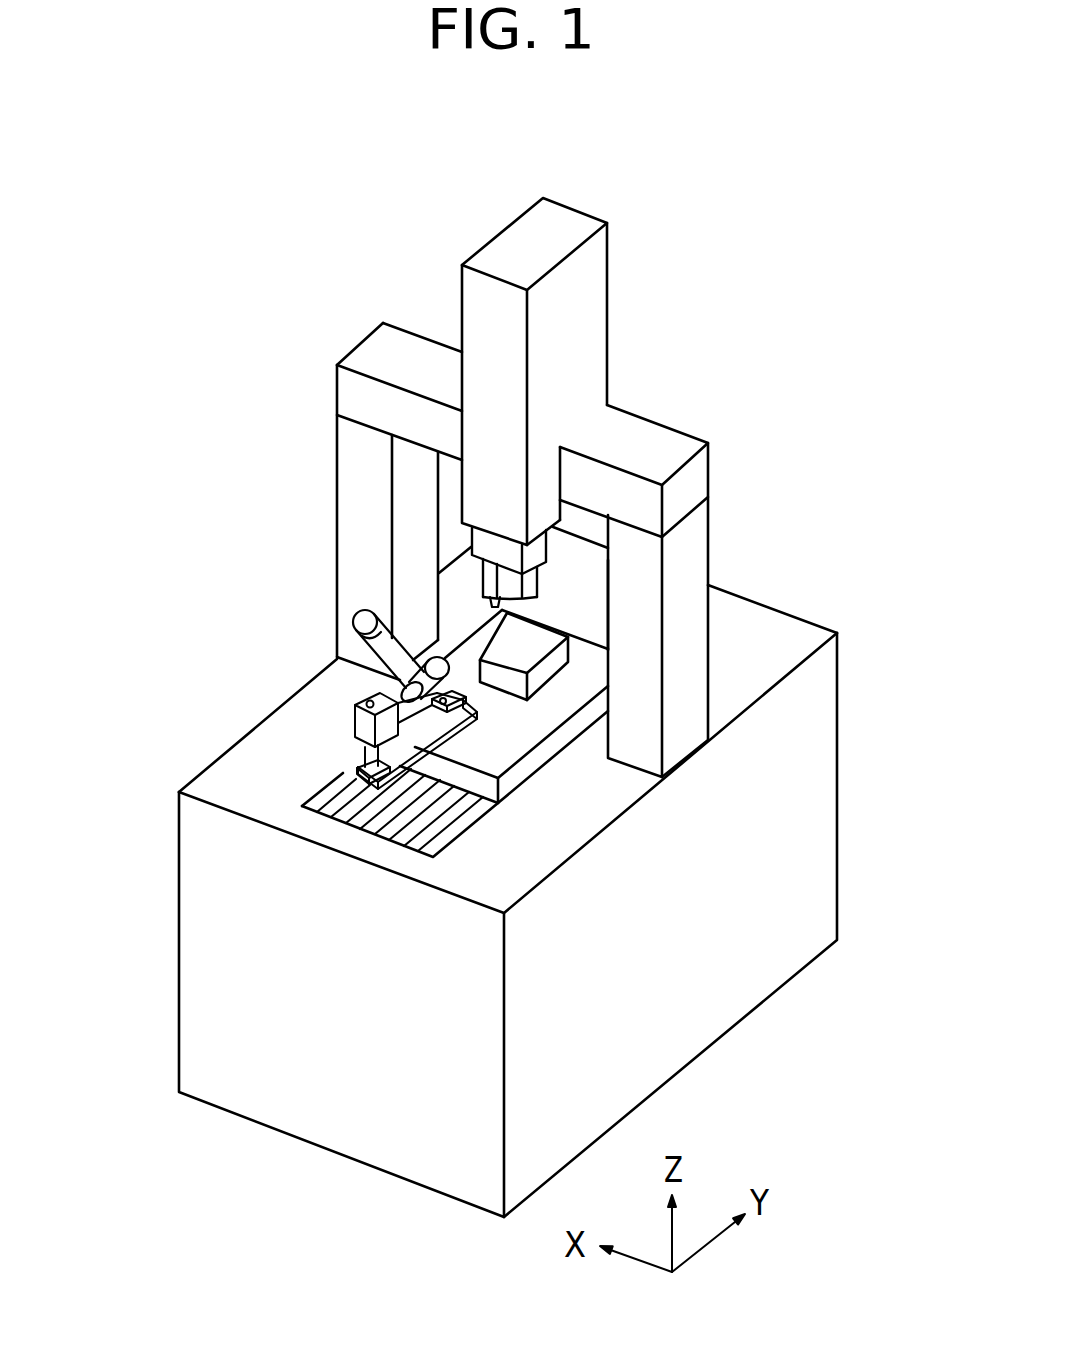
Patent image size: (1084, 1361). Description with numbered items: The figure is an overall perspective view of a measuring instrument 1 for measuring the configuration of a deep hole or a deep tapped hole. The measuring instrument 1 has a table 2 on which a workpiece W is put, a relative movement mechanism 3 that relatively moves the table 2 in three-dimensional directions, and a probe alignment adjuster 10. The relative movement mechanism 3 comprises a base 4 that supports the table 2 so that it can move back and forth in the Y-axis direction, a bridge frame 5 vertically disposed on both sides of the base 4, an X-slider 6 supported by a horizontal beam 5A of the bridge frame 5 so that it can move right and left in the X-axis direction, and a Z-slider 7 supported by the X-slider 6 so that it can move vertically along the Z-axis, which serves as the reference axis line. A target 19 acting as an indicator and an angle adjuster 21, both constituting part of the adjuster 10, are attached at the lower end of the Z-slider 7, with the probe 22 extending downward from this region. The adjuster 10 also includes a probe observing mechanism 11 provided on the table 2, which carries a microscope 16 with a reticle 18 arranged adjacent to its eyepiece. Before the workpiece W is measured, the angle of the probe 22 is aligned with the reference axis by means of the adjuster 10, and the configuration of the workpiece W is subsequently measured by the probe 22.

The measuring instrument 1 is at (733, 277).
The table 2 is at (497, 752).
The relative movement mechanism 3 is at (620, 698).
The base 4 is at (215, 893).
The bridge frame 5 is at (355, 457).
The horizontal beam 5A is at (650, 437).
The X-slider 6 is at (583, 293).
The Z-slider 7 is at (538, 544).
The probe alignment adjuster 10 is at (368, 684).
The probe observing mechanism 11 is at (373, 647).
The microscope 16 is at (294, 659).
The reticle 18 is at (294, 659).
The target 19 is at (610, 607).
The angle adjuster 21 is at (483, 578).
The probe 22 is at (490, 606).
The workpiece W is at (543, 672).